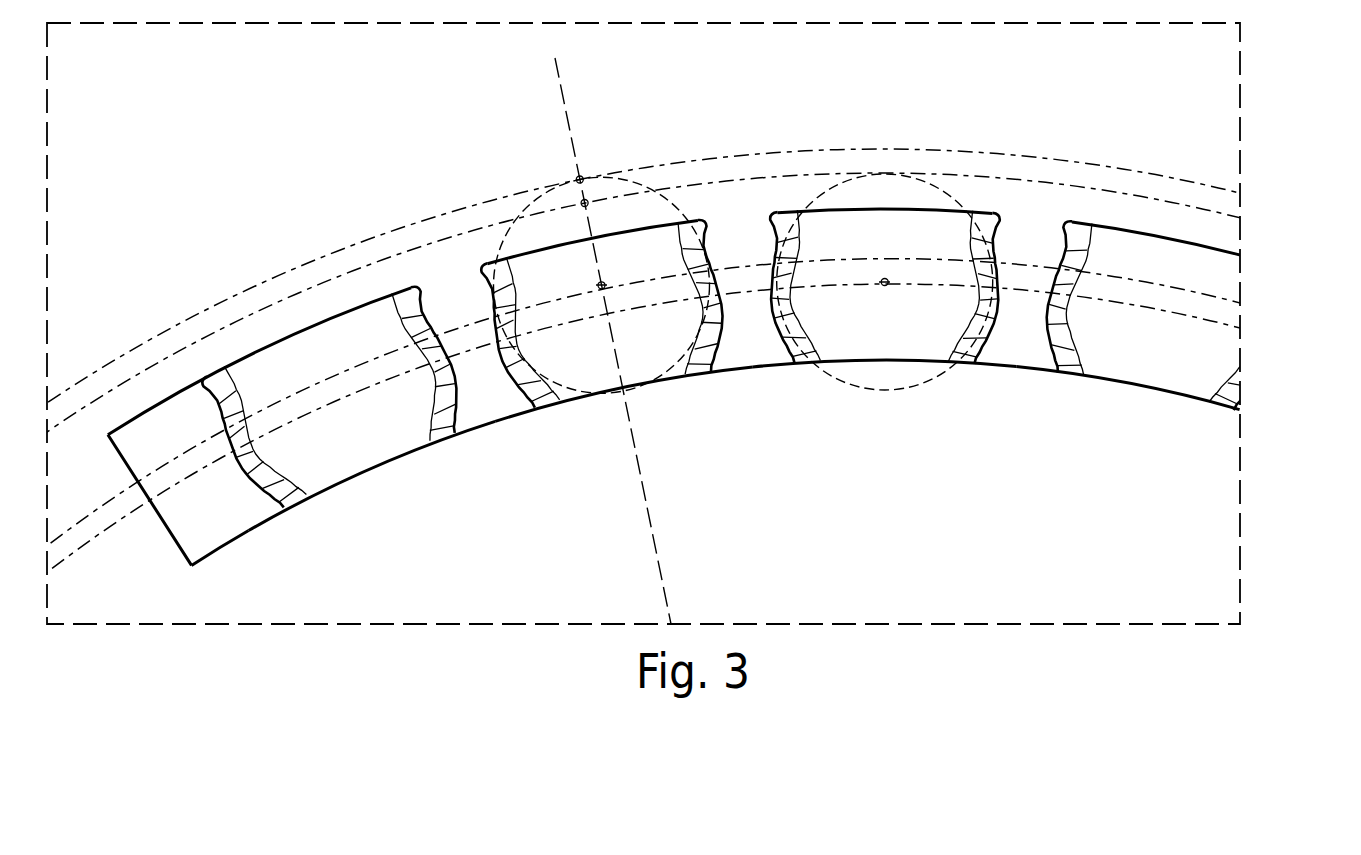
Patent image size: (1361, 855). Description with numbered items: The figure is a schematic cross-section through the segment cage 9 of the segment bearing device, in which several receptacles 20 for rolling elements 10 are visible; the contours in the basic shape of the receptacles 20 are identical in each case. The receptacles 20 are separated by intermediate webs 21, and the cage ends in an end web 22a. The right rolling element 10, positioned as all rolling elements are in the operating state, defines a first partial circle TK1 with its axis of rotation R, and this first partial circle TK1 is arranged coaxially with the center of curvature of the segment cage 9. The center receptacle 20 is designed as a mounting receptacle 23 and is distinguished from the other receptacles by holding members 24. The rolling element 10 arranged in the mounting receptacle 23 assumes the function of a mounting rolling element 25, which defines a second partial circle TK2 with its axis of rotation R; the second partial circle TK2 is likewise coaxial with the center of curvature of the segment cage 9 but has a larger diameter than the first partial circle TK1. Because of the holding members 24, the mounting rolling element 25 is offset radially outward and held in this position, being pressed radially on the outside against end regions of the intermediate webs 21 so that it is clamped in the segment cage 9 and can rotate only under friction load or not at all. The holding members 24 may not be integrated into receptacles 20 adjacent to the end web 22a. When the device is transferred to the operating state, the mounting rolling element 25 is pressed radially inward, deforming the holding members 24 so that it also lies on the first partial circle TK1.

The segment cage 9 is at (1222, 268).
The second partial circle TK2 is at (1223, 304).
The first partial circle TK1 is at (1223, 325).
The end web 22a is at (228, 524).
The receptacle 20 is at (342, 452).
The mounting receptacle 23 is at (670, 347).
The rolling element 10 is at (927, 349).
The mounting rolling element 25 is at (598, 366).
The axis of rotation R is at (606, 287).
The intermediate web 21 is at (493, 407).
The holding member 24 is at (517, 395).